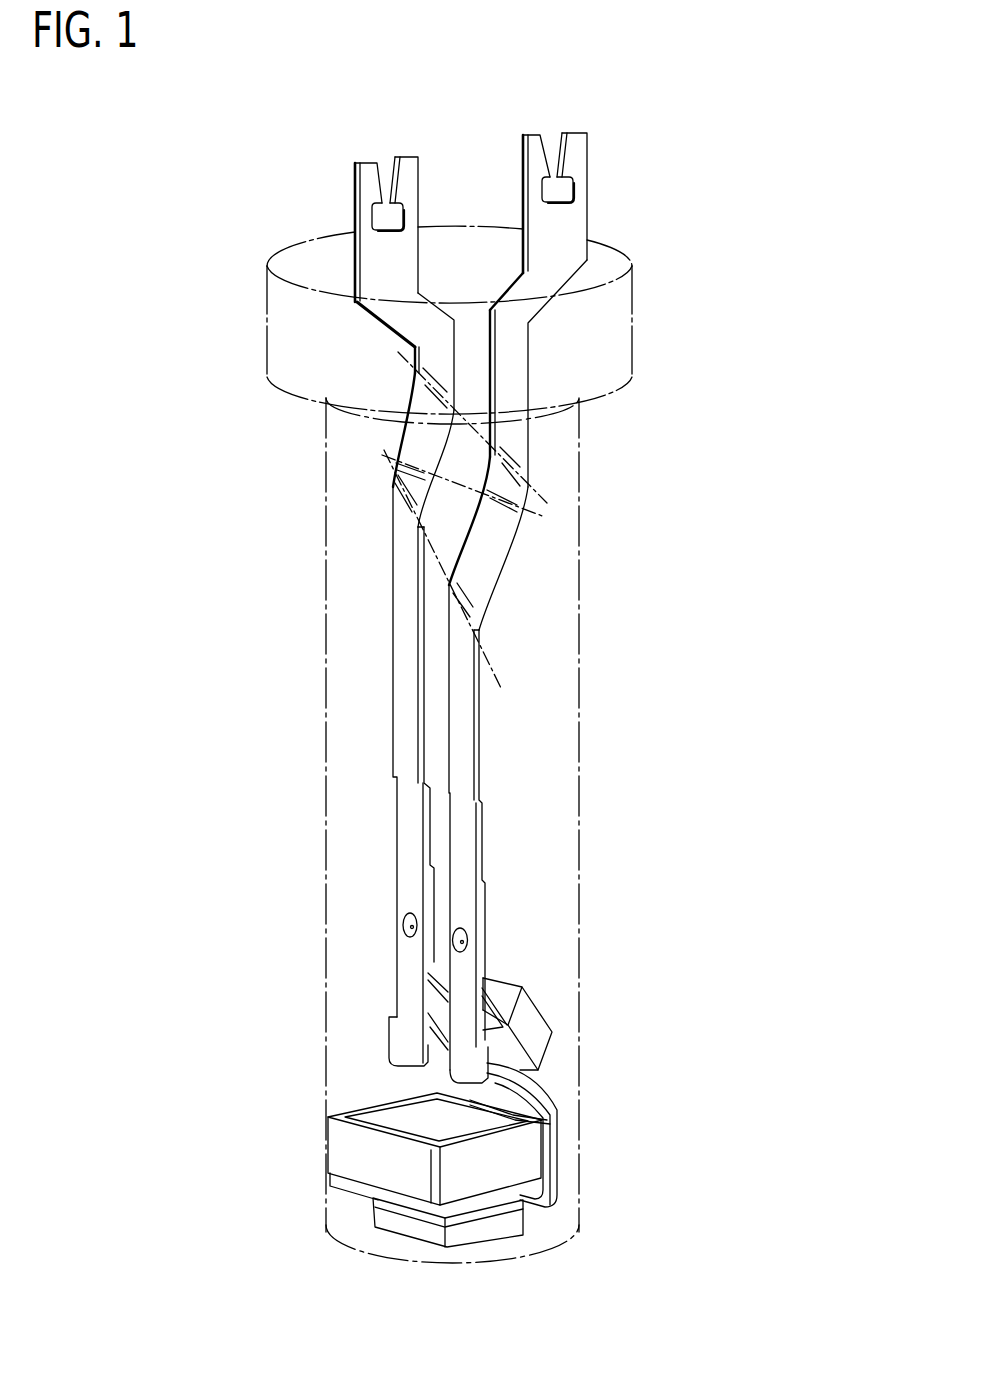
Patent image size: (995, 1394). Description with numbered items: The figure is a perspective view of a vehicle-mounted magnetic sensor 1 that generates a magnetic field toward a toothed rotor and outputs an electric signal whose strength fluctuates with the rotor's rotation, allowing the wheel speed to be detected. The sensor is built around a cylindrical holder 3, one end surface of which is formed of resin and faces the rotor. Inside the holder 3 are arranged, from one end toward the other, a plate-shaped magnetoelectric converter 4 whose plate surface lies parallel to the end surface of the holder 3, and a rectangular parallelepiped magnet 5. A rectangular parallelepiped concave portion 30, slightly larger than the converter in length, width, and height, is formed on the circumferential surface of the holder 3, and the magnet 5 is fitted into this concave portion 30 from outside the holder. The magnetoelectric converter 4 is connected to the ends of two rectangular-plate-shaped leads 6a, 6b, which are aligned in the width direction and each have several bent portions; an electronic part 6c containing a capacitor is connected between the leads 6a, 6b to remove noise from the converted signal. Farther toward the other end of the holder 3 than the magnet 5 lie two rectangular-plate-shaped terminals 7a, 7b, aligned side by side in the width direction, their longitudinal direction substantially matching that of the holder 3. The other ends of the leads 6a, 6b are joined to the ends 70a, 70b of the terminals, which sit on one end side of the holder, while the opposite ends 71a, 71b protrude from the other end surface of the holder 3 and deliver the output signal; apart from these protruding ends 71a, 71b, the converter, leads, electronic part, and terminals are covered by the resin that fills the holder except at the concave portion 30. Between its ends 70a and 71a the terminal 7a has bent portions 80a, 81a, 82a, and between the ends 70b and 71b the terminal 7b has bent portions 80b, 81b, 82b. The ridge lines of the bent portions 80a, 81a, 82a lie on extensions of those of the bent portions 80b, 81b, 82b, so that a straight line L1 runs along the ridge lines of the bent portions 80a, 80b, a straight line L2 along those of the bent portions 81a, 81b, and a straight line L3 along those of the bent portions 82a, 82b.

The magnetic sensor 1 is at (688, 722).
The holder 3 is at (580, 939).
The magnetoelectric converter 4 is at (505, 1232).
The magnet 5 is at (335, 1150).
The lead 6a is at (532, 1083).
The lead 6b is at (553, 1107).
The electronic part 6c is at (548, 1002).
The terminal 7a is at (482, 840).
The terminal 7b is at (393, 828).
The concave portion 30 is at (357, 1185).
The end of terminal 70a is at (463, 1072).
The end of terminal 70b is at (402, 1043).
The end of terminal 71a is at (580, 213).
The end of terminal 71b is at (370, 253).
The bent portion 80a is at (470, 614).
The bent portion 80b is at (407, 497).
The bent portion 81a is at (507, 507).
The bent portion 81b is at (417, 460).
The bent portion 82a is at (510, 460).
The bent portion 82b is at (418, 373).
The straight line L1 is at (497, 673).
The straight line L2 is at (532, 510).
The straight line L3 is at (478, 433).